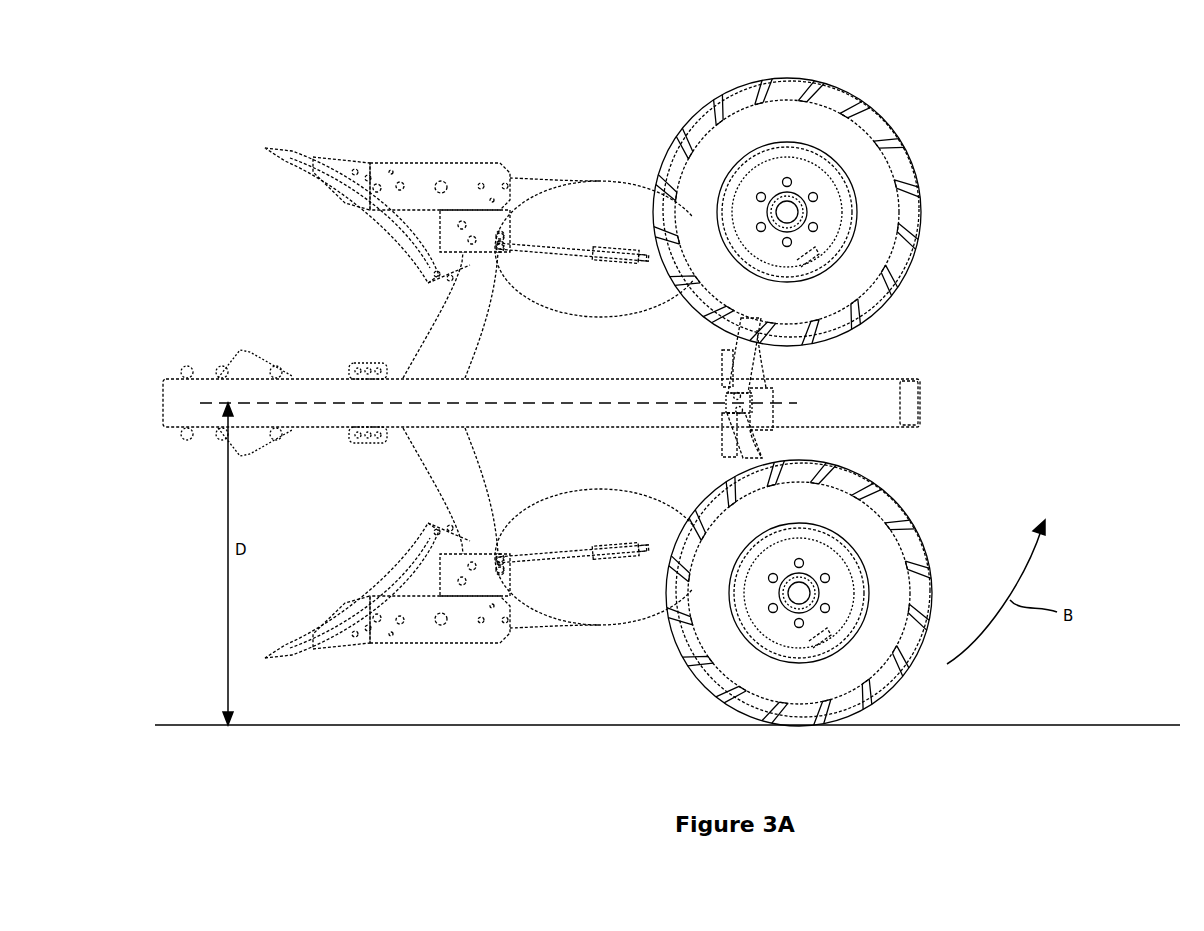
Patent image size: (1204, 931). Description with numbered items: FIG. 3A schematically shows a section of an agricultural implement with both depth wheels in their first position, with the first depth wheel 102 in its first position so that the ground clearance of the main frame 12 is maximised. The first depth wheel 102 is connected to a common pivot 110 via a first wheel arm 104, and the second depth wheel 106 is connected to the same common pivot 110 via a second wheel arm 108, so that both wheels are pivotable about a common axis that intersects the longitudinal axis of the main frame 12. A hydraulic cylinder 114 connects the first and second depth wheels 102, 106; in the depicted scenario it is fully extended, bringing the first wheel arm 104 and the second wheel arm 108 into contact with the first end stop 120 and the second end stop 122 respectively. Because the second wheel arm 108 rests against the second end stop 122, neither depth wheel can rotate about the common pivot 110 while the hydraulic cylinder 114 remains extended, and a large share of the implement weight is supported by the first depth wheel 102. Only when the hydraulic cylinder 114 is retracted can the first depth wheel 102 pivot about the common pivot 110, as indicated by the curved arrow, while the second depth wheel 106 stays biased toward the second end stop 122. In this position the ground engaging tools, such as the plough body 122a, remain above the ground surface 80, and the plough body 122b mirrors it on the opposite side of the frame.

The main frame 12 is at (437, 410).
The ground surface 80 is at (1158, 725).
The first depth wheel 102 is at (830, 668).
The first wheel arm 104 is at (742, 435).
The second depth wheel 106 is at (811, 197).
The second wheel arm 108 is at (745, 363).
The common pivot 110 is at (735, 400).
The hydraulic cylinder 114 is at (765, 408).
The first end stop 120 is at (723, 430).
The second end stop 122 is at (730, 362).
The plough body 122a is at (458, 621).
The upper plough unit 122b is at (458, 185).